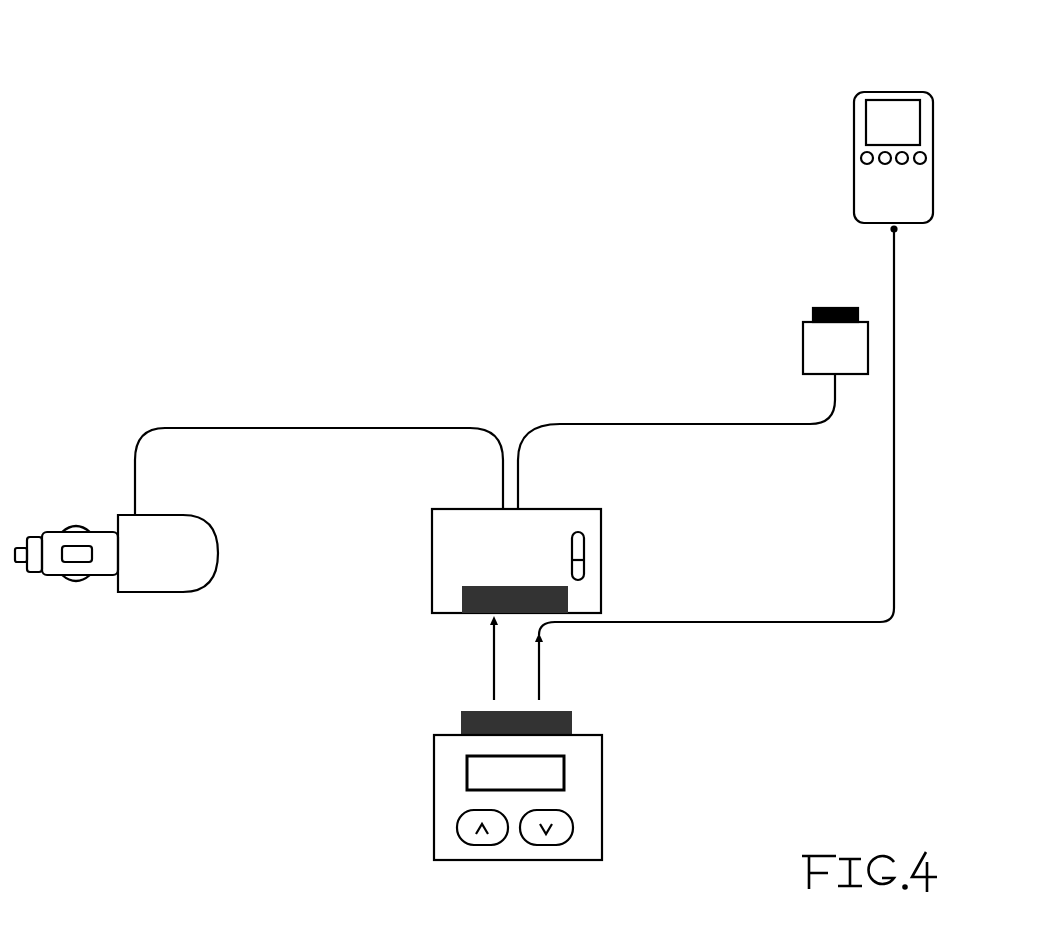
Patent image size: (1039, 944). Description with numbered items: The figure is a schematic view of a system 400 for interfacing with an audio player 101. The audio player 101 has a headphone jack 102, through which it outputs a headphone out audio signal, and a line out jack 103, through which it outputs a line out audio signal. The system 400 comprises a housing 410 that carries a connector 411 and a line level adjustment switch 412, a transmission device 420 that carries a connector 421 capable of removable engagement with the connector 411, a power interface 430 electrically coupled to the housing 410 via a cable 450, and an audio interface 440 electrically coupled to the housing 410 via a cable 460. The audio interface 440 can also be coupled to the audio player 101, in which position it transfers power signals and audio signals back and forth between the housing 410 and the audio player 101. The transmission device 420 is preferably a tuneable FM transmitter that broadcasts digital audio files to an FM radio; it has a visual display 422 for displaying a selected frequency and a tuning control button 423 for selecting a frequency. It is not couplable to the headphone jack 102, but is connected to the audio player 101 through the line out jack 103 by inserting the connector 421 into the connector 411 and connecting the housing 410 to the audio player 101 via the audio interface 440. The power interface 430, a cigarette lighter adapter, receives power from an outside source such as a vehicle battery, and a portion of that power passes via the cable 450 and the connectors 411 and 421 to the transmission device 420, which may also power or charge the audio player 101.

The system 400 is at (135, 70).
The audio player 101 is at (922, 197).
The headphone jack 102 is at (878, 90).
The line out jack 103 is at (890, 224).
The housing 410 is at (455, 527).
The connector 411 is at (470, 593).
The line level adjustment switch 412 is at (584, 548).
The transmission device 420 is at (585, 755).
The connector 421 is at (548, 712).
The visual display 422 is at (465, 768).
The tuning control button 423 is at (558, 833).
The power interface 430 is at (108, 567).
The audio interface 440 is at (815, 312).
The cable 450 is at (212, 428).
The cable 460 is at (722, 425).